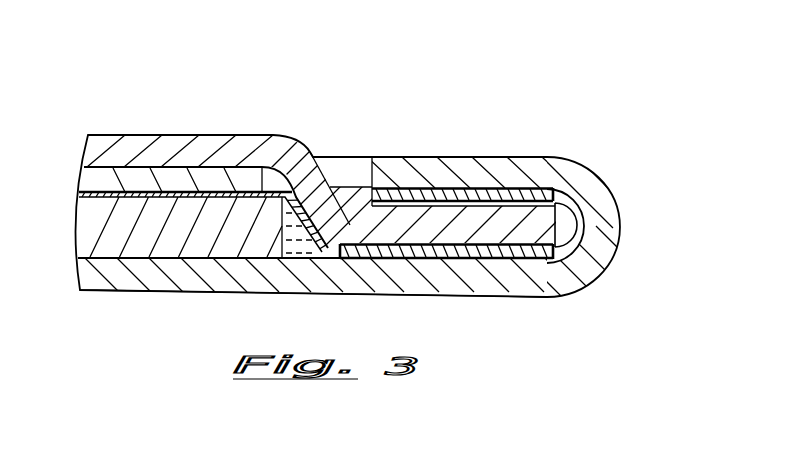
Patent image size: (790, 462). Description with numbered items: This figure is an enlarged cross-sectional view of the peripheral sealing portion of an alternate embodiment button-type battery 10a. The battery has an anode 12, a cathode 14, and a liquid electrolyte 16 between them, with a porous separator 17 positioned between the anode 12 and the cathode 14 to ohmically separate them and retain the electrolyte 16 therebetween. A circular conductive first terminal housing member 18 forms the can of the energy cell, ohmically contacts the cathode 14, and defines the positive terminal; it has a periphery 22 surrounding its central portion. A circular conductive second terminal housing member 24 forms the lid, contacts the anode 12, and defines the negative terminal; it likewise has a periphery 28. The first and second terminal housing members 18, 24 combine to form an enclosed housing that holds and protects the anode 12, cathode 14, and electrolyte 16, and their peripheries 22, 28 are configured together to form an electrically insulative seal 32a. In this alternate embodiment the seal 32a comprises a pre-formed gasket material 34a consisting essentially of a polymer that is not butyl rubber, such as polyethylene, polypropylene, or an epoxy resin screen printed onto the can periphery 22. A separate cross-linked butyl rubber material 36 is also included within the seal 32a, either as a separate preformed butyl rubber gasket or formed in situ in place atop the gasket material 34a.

The button-type battery 10a is at (311, 107).
The anode 12 is at (100, 180).
The cathode 14 is at (88, 227).
The liquid electrolyte 16 is at (324, 192).
The porous separator 17 is at (88, 195).
The first terminal housing member 18 is at (150, 272).
The periphery of first terminal housing member 22 is at (483, 299).
The second terminal housing member 24 is at (182, 150).
The periphery of second terminal housing member 28 is at (608, 242).
The electrically insulative seal 32a is at (558, 133).
The pre-formed gasket material 34a is at (575, 207).
The cross-linked butyl rubber material 36 is at (558, 276).